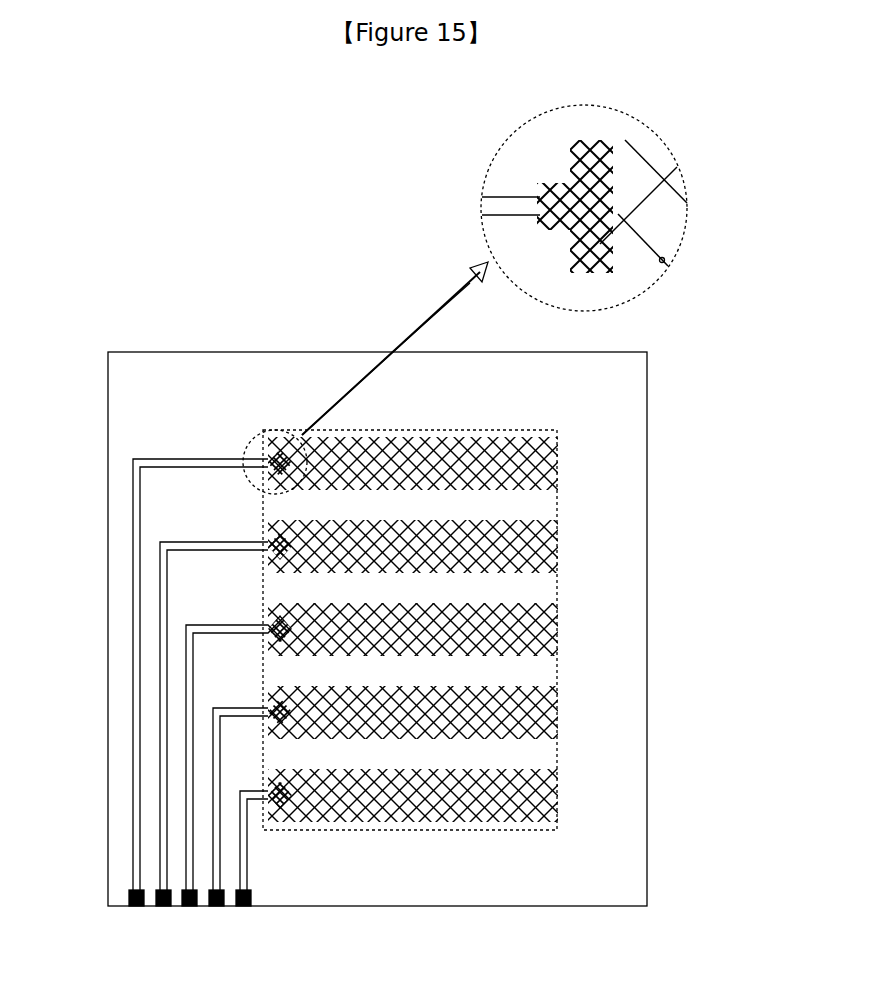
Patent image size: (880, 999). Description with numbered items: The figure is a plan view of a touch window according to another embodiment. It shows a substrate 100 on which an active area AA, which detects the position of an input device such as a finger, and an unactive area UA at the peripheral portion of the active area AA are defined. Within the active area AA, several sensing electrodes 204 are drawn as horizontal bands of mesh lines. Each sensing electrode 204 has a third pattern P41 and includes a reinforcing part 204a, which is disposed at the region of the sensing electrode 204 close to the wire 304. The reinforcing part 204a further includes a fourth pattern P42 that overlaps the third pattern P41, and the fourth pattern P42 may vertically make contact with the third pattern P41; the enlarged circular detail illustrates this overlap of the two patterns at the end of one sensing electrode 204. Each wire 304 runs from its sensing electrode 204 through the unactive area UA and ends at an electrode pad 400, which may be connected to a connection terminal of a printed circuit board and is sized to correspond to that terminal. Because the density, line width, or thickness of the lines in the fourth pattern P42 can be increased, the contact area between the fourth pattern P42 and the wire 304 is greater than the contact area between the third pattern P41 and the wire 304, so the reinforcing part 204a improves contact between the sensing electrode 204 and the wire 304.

The substrate 100 is at (208, 405).
The sensing electrode 204 is at (347, 445).
The reinforcing part 204a is at (281, 440).
The wire 304 is at (134, 507).
The electrode pad 400 is at (128, 898).
The unactive area UA is at (627, 392).
The active area AA is at (545, 505).
The third pattern P41 is at (640, 290).
The fourth pattern P42 is at (600, 118).